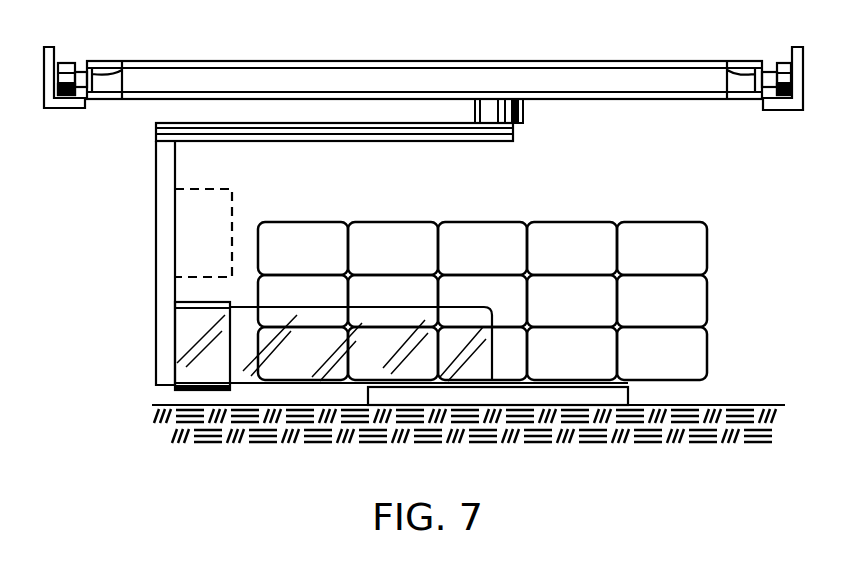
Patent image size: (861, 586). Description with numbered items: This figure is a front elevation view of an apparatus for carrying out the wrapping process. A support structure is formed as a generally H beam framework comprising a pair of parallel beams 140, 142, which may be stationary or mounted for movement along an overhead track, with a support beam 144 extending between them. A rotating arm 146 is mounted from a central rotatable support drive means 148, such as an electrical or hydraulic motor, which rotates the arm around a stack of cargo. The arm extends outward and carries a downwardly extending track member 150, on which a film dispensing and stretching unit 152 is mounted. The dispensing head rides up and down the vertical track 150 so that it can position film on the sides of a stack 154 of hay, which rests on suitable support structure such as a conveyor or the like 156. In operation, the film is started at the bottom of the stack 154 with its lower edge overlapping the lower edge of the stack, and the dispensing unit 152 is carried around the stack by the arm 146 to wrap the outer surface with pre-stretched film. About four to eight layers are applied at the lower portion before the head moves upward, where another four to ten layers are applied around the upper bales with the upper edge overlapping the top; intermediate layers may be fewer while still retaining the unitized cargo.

The parallel beam 140 is at (123, 65).
The parallel beam 142 is at (729, 63).
The support beam 144 is at (466, 61).
The rotating arm 146 is at (395, 143).
The rotatable support drive means 148 is at (524, 118).
The track member 150 is at (167, 300).
The film dispensing and stretching unit 152 is at (195, 245).
The stack 154 is at (700, 256).
The conveyor 156 is at (578, 392).